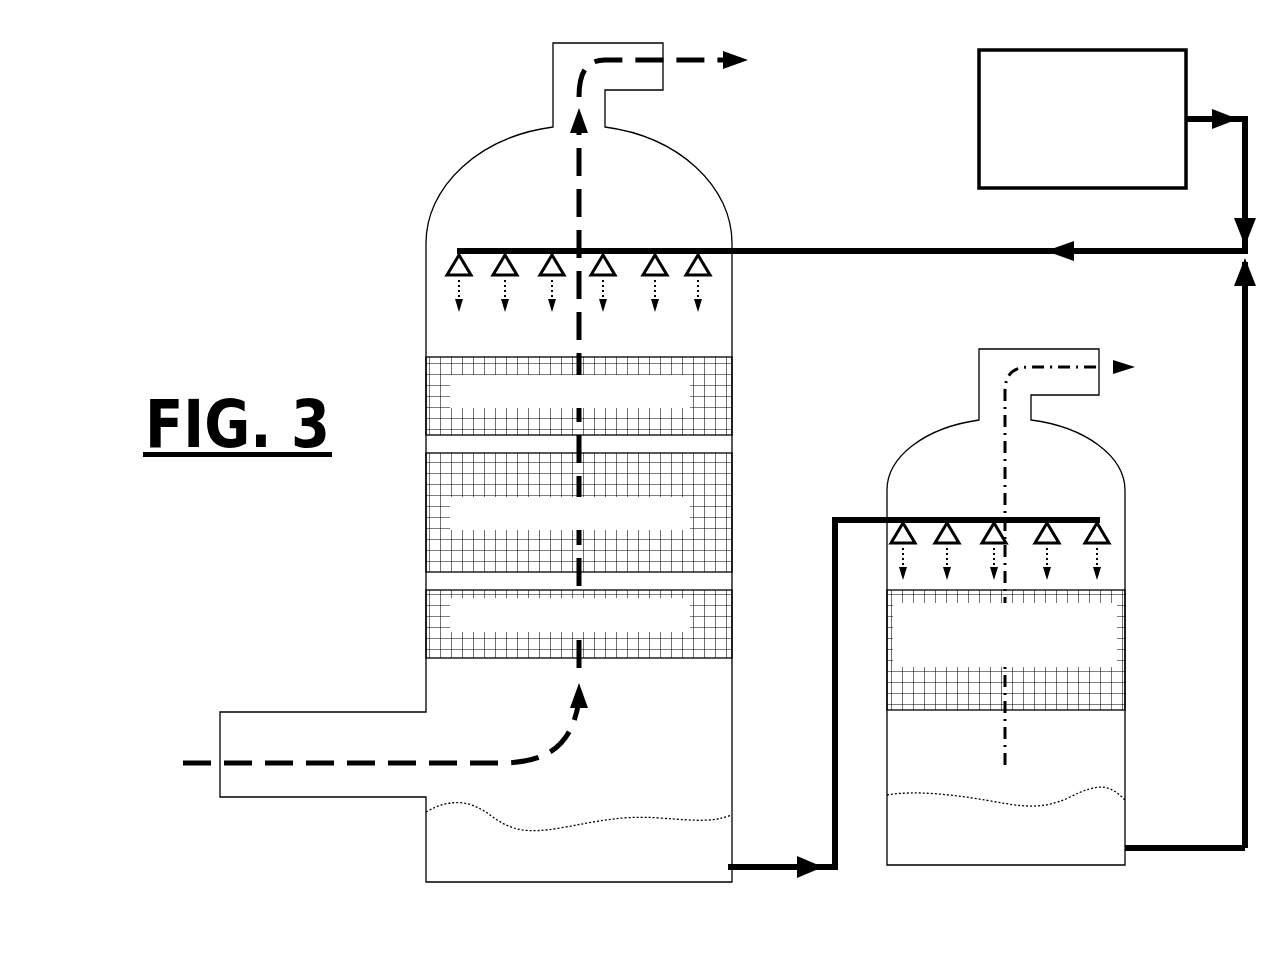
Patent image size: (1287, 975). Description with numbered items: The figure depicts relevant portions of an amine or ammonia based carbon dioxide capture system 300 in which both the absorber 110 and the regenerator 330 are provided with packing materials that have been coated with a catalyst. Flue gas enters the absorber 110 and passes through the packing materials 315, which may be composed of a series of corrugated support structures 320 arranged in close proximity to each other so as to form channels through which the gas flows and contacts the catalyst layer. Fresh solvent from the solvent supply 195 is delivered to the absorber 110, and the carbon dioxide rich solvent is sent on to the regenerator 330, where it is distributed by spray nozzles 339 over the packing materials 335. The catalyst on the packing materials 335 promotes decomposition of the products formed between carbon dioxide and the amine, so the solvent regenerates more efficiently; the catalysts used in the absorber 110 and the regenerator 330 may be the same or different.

The CO2 capture system 300 is at (290, 107).
The absorber tower 110 is at (425, 296).
The packing materials 315 is at (460, 373).
The corrugated support structures 320 is at (715, 296).
The solvent supply 195 is at (985, 147).
The regeneration tower 330 is at (928, 477).
The regenerator spray nozzles 339 is at (1117, 569).
The packing materials 335 is at (1102, 667).